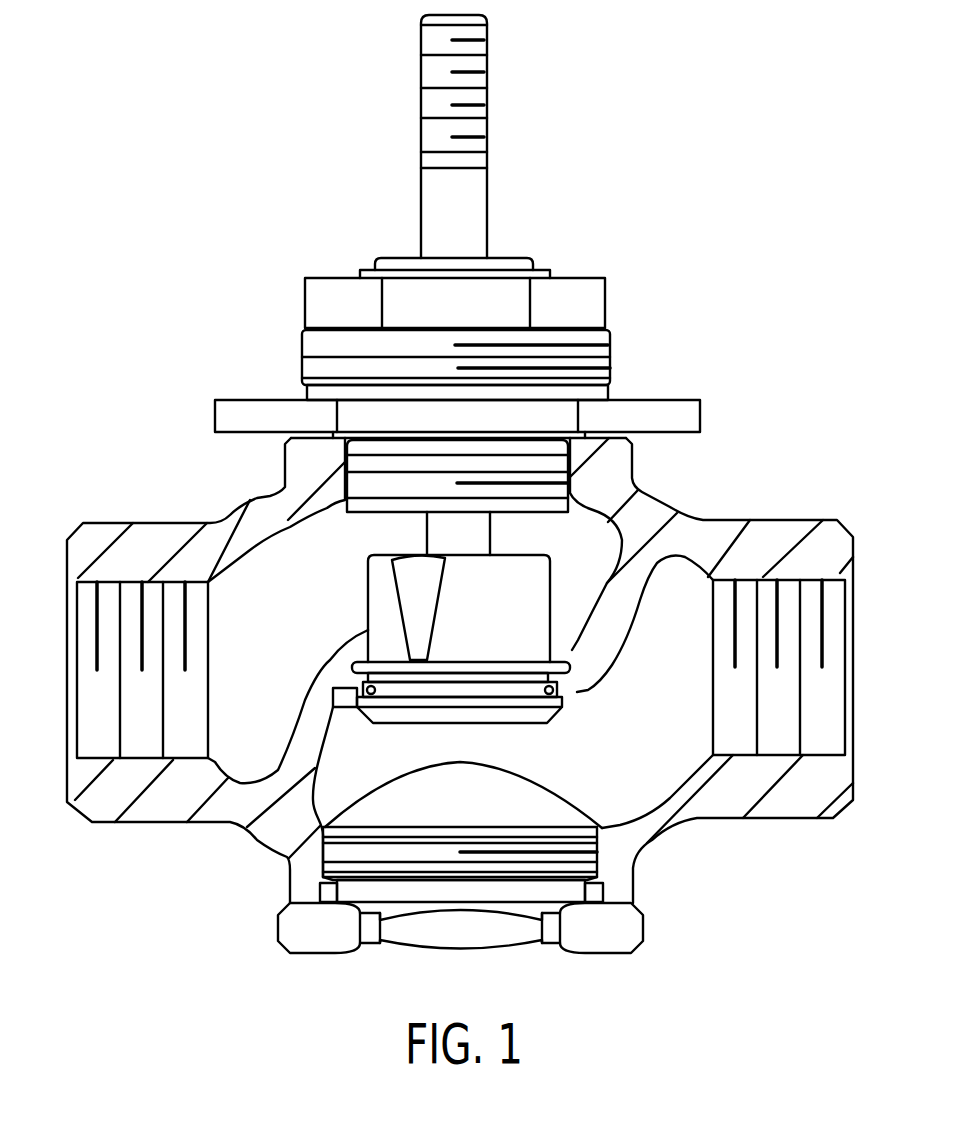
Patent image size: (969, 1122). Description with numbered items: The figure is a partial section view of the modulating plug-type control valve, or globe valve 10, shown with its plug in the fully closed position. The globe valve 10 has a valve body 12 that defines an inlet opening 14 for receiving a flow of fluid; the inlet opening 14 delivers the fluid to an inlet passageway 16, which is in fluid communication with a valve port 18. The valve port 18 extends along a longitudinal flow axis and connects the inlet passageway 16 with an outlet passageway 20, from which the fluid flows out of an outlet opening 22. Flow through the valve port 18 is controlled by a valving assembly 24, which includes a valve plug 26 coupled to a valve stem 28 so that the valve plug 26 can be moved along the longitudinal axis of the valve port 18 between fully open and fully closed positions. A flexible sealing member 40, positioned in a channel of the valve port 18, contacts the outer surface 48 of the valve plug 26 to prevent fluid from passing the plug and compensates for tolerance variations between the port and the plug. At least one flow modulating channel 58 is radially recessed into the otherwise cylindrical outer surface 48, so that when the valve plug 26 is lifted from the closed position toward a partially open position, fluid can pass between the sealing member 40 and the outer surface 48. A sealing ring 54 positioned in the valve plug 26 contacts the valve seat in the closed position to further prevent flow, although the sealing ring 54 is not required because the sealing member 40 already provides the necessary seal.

The globe valve 10 is at (732, 287).
The valve body 12 is at (713, 527).
The inlet opening 14 is at (850, 640).
The inlet passageway 16 is at (673, 770).
The valve port 18 is at (533, 743).
The outlet passageway 20 is at (265, 552).
The outlet opening 22 is at (70, 645).
The valving assembly 24 is at (577, 547).
The valve plug 26 is at (543, 608).
The valve stem 28 is at (473, 227).
The sealing member 40 is at (483, 670).
The outer surface 48 is at (362, 583).
The sealing ring 54 is at (403, 690).
The flow modulating channel 58 is at (420, 600).